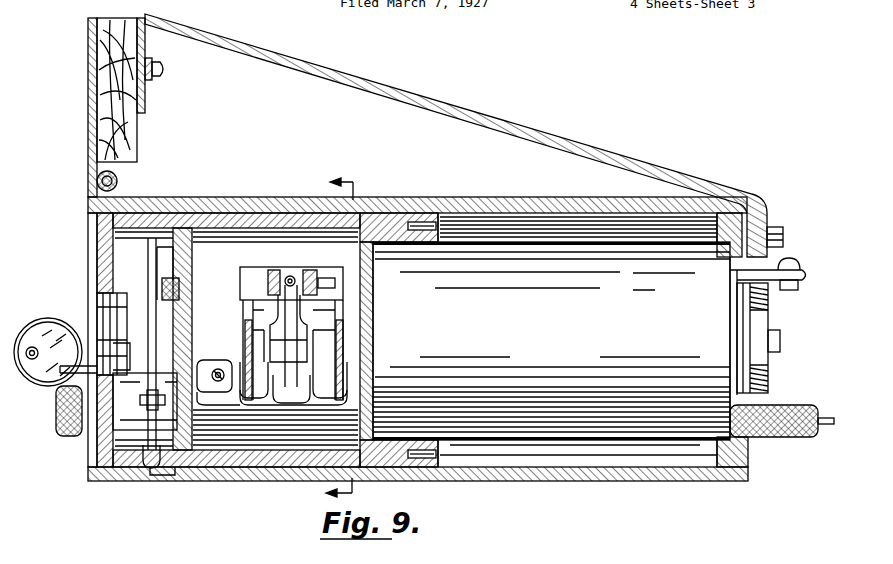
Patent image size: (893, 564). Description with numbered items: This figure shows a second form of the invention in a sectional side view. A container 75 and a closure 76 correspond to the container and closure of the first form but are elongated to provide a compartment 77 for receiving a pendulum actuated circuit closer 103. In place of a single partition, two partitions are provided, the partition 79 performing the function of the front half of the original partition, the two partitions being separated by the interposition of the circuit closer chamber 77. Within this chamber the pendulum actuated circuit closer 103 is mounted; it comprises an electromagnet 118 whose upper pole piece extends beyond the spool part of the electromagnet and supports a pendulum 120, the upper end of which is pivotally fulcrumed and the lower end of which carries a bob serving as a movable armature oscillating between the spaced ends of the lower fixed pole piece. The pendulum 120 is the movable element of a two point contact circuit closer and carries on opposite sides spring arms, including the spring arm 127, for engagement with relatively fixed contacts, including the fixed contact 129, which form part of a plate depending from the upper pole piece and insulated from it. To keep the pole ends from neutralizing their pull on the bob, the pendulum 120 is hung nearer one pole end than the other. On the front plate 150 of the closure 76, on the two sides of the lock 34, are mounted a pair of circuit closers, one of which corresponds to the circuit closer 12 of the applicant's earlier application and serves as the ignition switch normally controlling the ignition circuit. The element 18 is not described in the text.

The circuit closer 12 is at (331, 341).
The casing top plate 18 is at (392, 205).
The lock 34 is at (113, 320).
The container 75 is at (512, 204).
The closure 76 is at (270, 227).
The compartment 77 is at (235, 243).
The partition 79 is at (200, 235).
The pendulum actuated circuit closer 103 is at (317, 382).
The electromagnet 118 is at (262, 383).
The pendulum 120 is at (308, 268).
The spring arm 127 is at (270, 327).
The fixed contact 129 is at (262, 353).
The front plate 150 is at (106, 249).